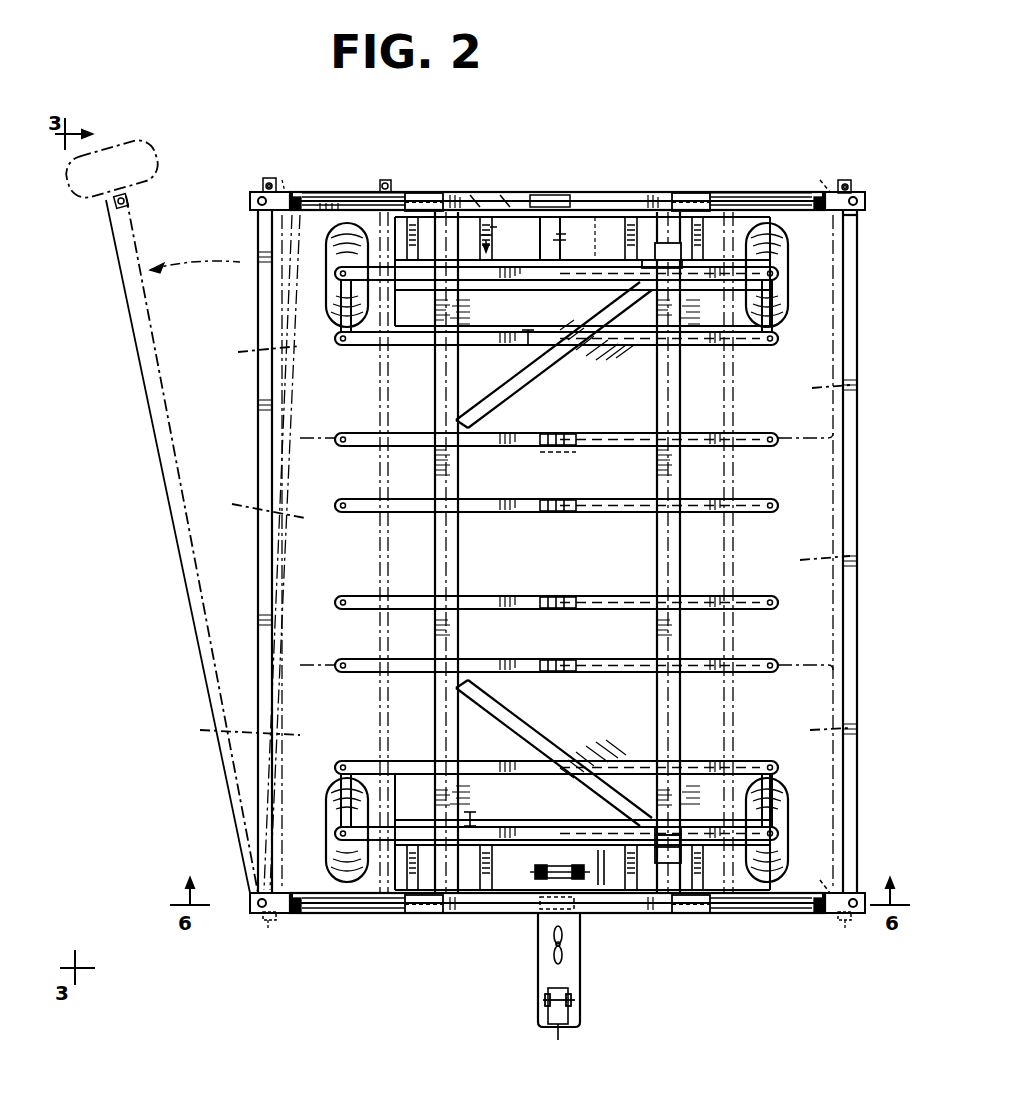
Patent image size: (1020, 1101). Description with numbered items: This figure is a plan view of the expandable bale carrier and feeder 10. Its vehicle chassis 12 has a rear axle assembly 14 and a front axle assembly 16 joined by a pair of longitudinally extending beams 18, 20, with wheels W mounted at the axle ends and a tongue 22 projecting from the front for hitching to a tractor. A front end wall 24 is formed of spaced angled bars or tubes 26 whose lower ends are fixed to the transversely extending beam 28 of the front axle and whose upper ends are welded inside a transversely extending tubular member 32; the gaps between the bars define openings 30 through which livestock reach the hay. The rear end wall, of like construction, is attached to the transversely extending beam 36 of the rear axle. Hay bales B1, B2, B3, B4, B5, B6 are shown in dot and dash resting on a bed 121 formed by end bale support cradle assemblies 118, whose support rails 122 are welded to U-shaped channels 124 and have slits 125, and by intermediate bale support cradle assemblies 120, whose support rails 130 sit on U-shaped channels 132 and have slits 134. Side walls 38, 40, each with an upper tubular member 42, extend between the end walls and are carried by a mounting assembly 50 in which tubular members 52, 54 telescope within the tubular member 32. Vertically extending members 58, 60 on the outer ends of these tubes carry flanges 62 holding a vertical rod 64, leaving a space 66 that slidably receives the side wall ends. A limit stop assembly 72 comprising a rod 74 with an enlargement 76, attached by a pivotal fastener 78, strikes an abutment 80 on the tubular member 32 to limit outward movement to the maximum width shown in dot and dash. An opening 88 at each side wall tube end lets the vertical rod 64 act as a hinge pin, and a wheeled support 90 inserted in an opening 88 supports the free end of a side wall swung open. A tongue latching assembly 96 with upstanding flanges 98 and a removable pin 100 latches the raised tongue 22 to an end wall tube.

The expandable bale carrier and feeder 10 is at (548, 170).
The vehicle chassis 12 is at (462, 592).
The rear axle assembly 14 is at (526, 275).
The front axle assembly 16 is at (522, 845).
The longitudinally extending beam 18 is at (676, 578).
The longitudinally extending beam 20 is at (436, 566).
The tongue 22 is at (540, 1018).
The front end wall 24 is at (460, 925).
The angled bars or tubes 26 is at (690, 262).
The transversely extending beam 28 is at (590, 780).
The openings 30 is at (466, 247).
The transversely extending tubular member 32 is at (480, 190).
The transversely extending beam 36 is at (604, 262).
The side wall 38 is at (858, 465).
The side wall 40 is at (204, 620).
The upper tubular member 42 is at (852, 430).
The mounting assembly 50 is at (592, 185).
The tubular member 52 is at (772, 192).
The tubular member 54 is at (384, 186).
The vertically extending member 58 is at (828, 185).
The vertically extending member 60 is at (283, 192).
The flanges 62 is at (262, 180).
The vertical rod 64 is at (250, 205).
The space 66 is at (266, 920).
The limit stop assembly 72 is at (340, 192).
The transversely extending rod 74 is at (378, 192).
The enlargement 76 is at (462, 192).
The pivotal fastener 78 is at (296, 196).
The abutment 80 is at (428, 192).
The opening 88 is at (268, 178).
The wheeled support 90 is at (152, 152).
The tongue latching assembly 96 is at (578, 1018).
The upstanding flanges 98 is at (560, 1025).
The removable pin 100 is at (578, 998).
The end bale support cradle assembly 118 is at (776, 330).
The intermediate bale support cradle assembly 120 is at (752, 478).
The bed 121 is at (722, 702).
The support rails 122 is at (644, 292).
The U-shaped channel 124 is at (452, 330).
The opening or slit 125 is at (528, 333).
The support rails 130 is at (576, 450).
The U-shaped channels 132 is at (456, 482).
The opening or slit 134 is at (590, 448).
The wheels W is at (788, 282).
The hay bale B1 is at (850, 388).
The hay bale B2 is at (850, 556).
The hay bale B3 is at (850, 728).
The hay bale B4 is at (248, 307).
The hay bale B5 is at (250, 459).
The hay bale B6 is at (232, 677).